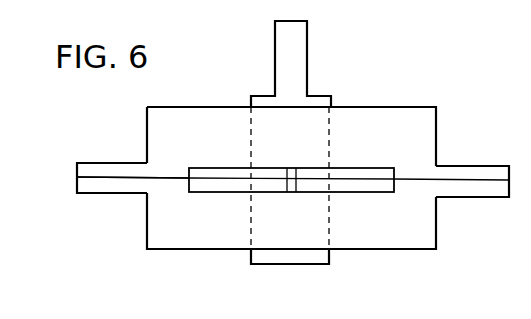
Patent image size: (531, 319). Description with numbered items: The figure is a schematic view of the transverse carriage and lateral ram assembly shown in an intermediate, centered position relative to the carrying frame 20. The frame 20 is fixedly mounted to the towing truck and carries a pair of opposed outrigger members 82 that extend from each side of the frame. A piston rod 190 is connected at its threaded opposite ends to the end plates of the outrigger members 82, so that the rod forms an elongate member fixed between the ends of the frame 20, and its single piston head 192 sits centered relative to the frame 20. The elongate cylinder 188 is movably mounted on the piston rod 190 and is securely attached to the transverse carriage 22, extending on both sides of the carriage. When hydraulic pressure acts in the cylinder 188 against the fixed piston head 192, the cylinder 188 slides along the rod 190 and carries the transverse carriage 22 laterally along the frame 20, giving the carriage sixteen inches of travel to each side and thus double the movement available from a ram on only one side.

The frame 20 is at (424, 107).
The transverse carriage 22 is at (318, 96).
The outrigger members 82 is at (135, 163).
The cylinder 188 is at (352, 168).
The piston rod 190 is at (160, 177).
The piston head 192 is at (290, 192).